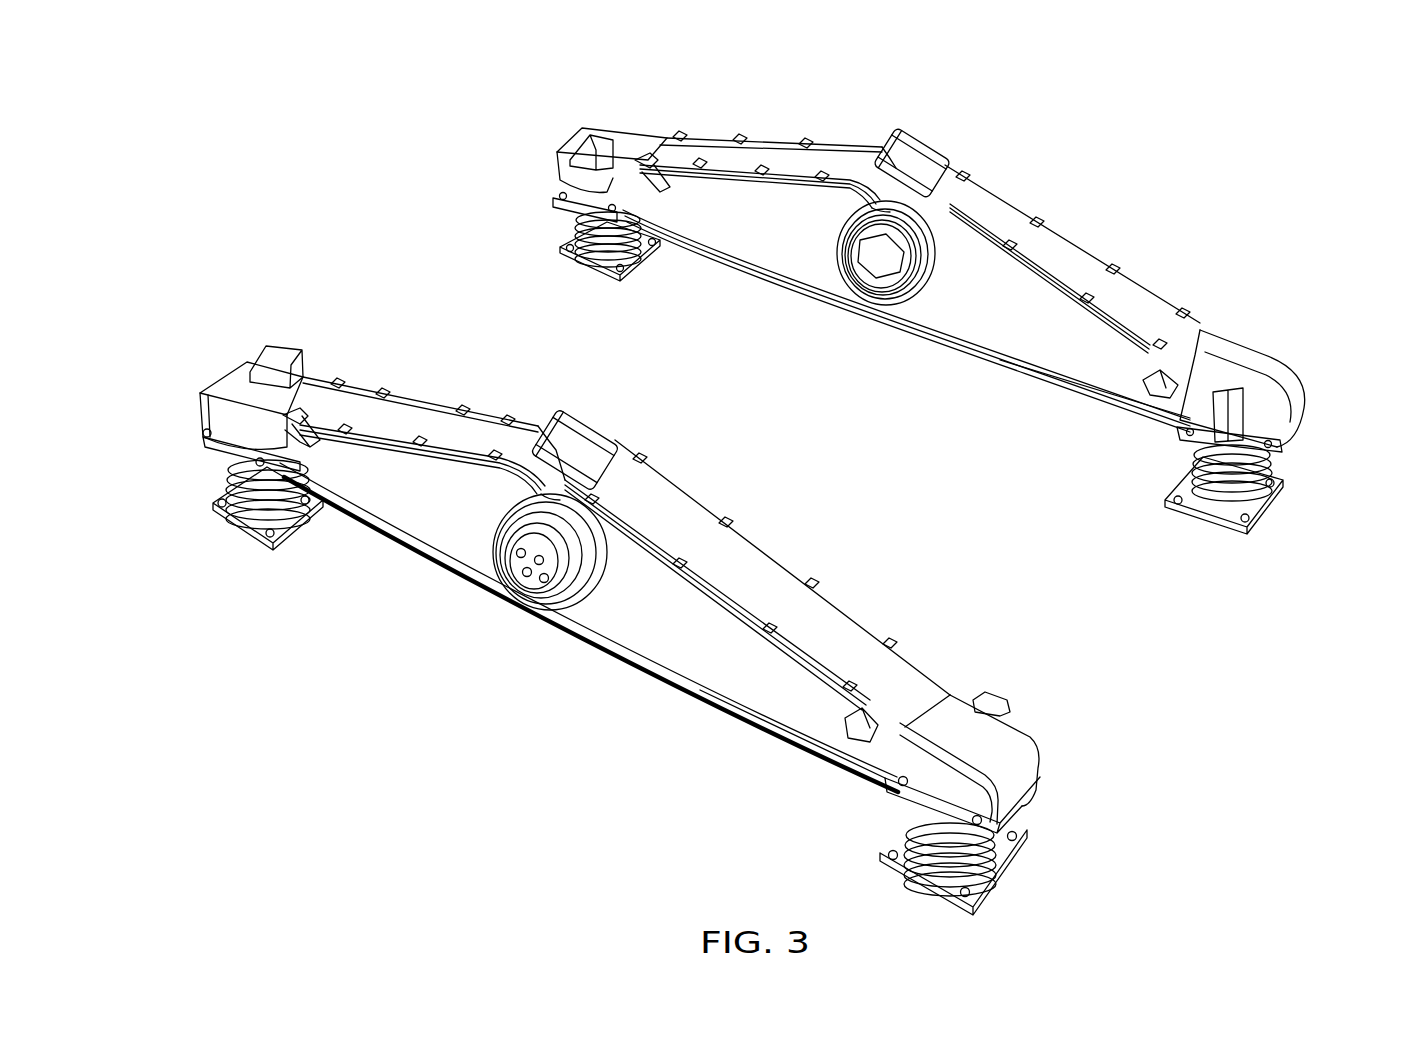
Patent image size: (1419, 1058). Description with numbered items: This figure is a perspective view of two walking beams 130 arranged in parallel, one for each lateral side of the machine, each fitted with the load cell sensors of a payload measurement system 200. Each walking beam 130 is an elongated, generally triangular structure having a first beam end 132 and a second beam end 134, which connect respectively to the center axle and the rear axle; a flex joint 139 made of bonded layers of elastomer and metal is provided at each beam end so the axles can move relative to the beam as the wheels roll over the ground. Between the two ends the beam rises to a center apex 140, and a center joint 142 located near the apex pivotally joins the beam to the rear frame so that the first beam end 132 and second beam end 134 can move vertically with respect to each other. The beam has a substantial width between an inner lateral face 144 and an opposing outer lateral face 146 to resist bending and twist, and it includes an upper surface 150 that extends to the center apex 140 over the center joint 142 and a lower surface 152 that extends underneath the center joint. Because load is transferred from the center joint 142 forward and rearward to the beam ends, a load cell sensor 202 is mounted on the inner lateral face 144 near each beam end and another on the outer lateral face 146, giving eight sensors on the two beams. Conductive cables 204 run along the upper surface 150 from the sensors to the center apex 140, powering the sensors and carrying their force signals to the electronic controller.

The walking beam 130 is at (366, 612).
The first beam end 132 is at (1060, 728).
The second beam end 134 is at (218, 350).
The flex joint 139 is at (225, 500).
The center apex 140 is at (630, 408).
The center joint 142 is at (540, 600).
The inner lateral face 144 is at (845, 618).
The outer lateral face 146 is at (757, 690).
The upper surface 150 is at (775, 578).
The lower surface 152 is at (818, 780).
The payload measurement system 200 is at (260, 330).
The load cell sensor 202 is at (318, 372).
The conductive cable 204 is at (1070, 297).